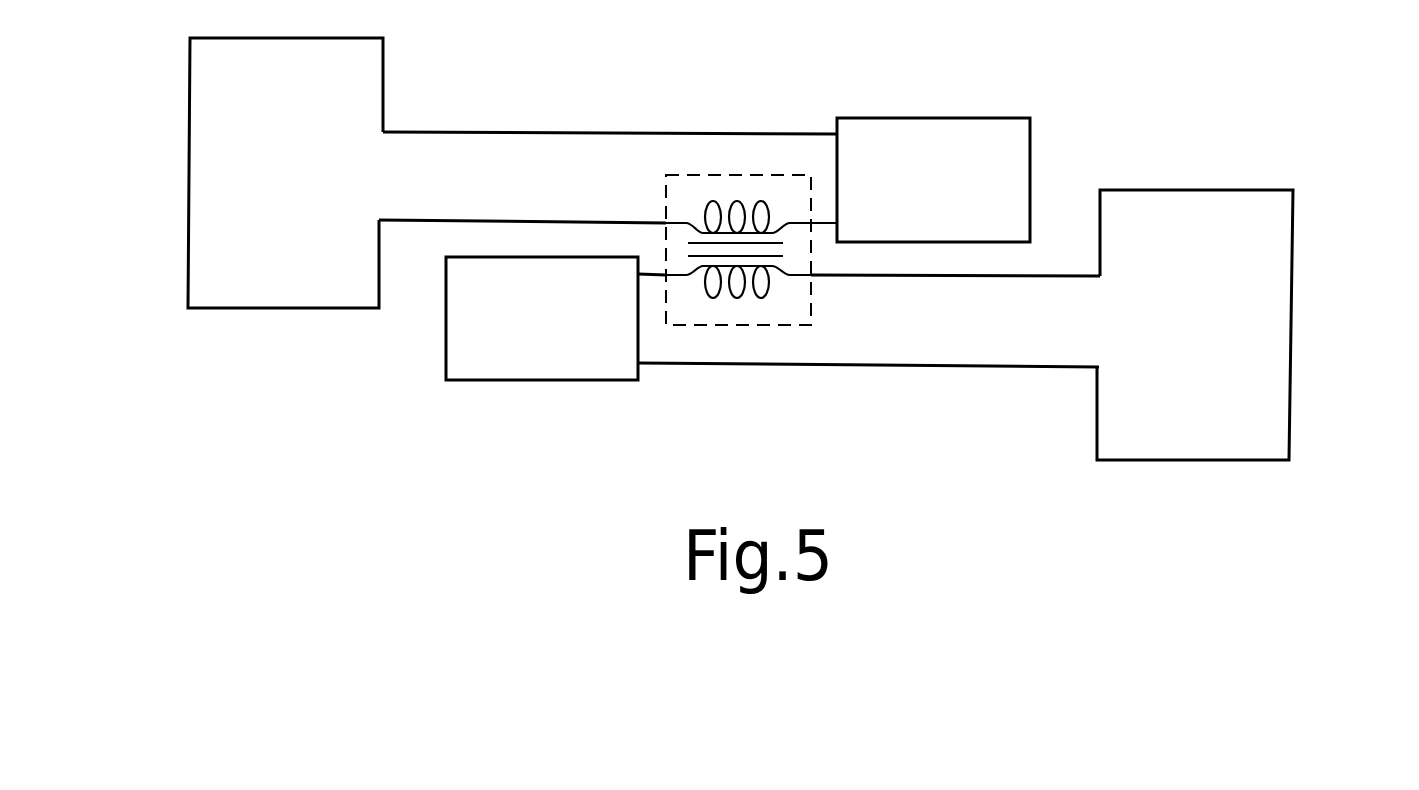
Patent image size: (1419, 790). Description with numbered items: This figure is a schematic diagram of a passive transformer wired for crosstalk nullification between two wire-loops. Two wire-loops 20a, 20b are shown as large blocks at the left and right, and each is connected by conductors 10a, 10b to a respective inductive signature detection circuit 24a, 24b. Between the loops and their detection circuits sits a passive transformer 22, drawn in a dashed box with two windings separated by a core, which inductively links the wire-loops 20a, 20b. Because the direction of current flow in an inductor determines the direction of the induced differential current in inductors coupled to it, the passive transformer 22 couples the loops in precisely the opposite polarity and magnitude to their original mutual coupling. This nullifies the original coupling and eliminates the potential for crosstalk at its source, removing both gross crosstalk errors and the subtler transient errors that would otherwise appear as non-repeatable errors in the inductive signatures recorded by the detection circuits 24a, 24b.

The first circuit board 10a is at (962, 436).
The second circuit board 10b is at (540, 110).
The wire-loop 20a is at (1294, 270).
The wire-loop 20b is at (190, 180).
The passive transformer 22 is at (733, 174).
The inductive signature detection circuit 24a is at (468, 352).
The inductive signature detection circuit 24b is at (961, 136).